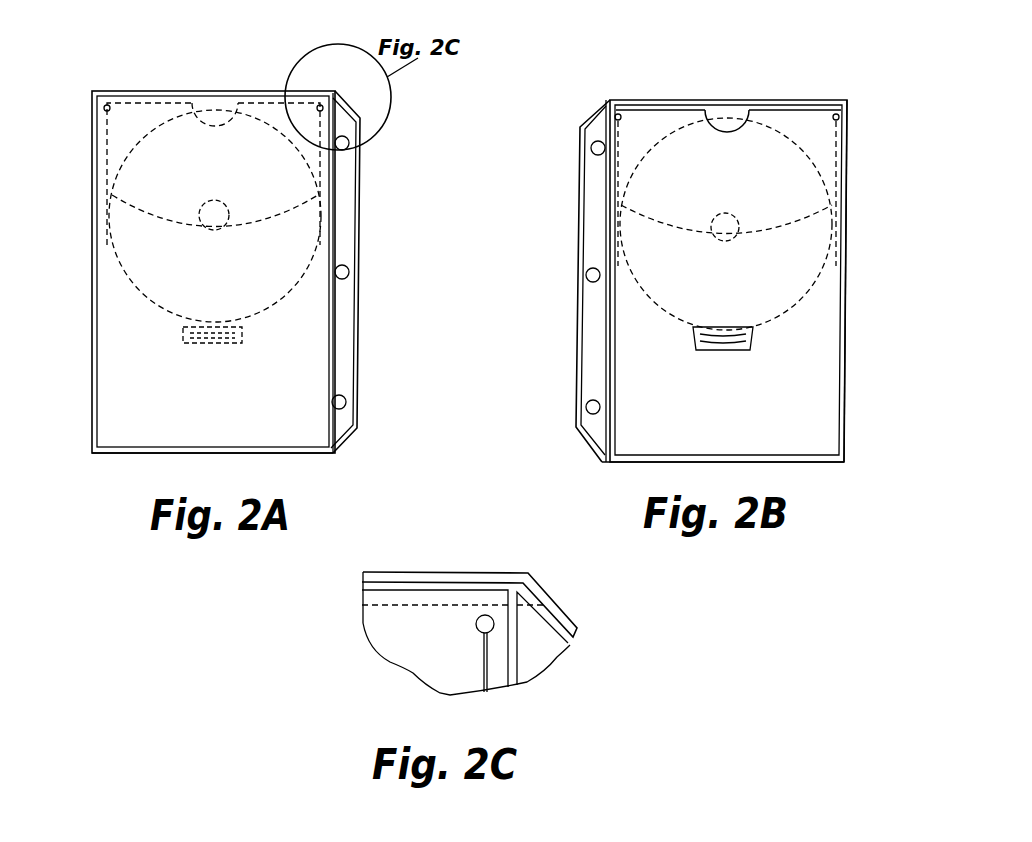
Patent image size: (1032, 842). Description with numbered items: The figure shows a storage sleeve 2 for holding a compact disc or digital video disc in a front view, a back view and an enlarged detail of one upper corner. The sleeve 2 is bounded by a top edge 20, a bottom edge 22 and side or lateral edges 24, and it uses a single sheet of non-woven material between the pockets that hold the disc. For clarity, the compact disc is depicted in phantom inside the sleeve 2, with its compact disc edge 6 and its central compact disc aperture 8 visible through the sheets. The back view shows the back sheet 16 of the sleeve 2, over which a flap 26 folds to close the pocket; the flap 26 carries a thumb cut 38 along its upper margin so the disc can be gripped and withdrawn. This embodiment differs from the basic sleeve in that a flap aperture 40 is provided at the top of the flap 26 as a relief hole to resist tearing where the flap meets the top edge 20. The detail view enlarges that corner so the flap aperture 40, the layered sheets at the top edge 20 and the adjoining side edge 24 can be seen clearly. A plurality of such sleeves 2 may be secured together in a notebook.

In FIG. 2A, the storage sleeve 2 is at (552, 268).
In FIG. 2B, the compact disc edge 6 is at (632, 98).
In FIG. 2A, the compact disc aperture 8 is at (213, 202).
In FIG. 2B, the back sheet 16 is at (662, 138).
In FIG. 2A, the top edge 20 is at (147, 91).
In FIG. 2C, the top edge 20 is at (437, 572).
In FIG. 2A, the bottom edge 22 is at (302, 453).
In FIG. 2B, the bottom edge 22 is at (650, 461).
In FIG. 2A, the side or lateral edge 24 is at (92, 338).
In FIG. 2B, the side or lateral edge 24 is at (847, 313).
In FIG. 2B, the flap 26 is at (802, 118).
In FIG. 2B, the thumb cut 38 is at (707, 118).
In FIG. 2C, the flap aperture 40 is at (485, 615).